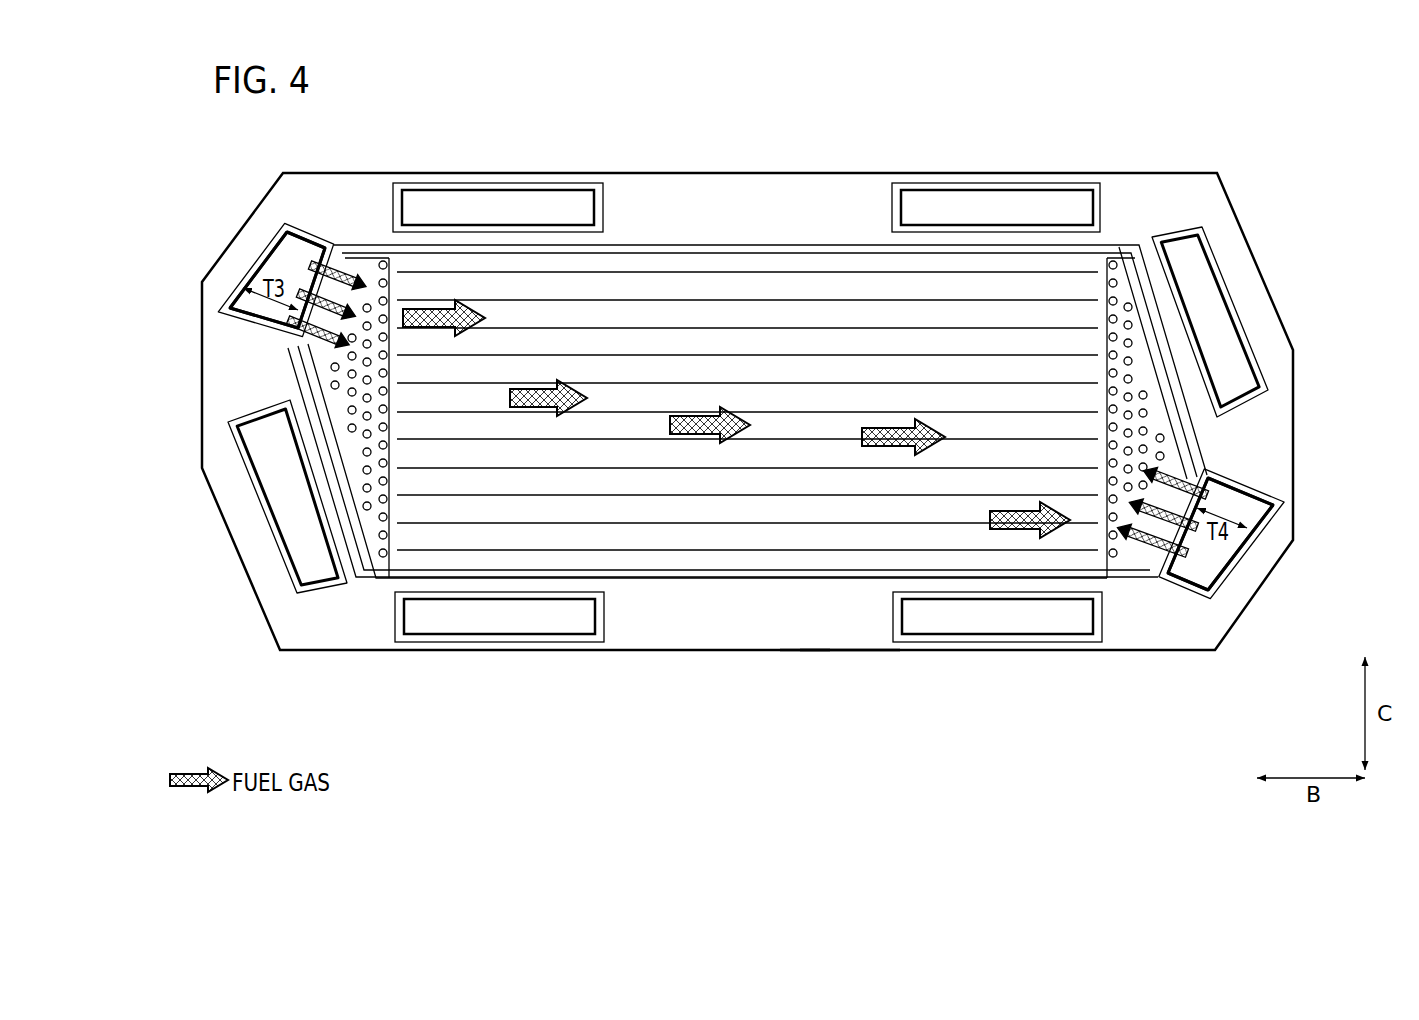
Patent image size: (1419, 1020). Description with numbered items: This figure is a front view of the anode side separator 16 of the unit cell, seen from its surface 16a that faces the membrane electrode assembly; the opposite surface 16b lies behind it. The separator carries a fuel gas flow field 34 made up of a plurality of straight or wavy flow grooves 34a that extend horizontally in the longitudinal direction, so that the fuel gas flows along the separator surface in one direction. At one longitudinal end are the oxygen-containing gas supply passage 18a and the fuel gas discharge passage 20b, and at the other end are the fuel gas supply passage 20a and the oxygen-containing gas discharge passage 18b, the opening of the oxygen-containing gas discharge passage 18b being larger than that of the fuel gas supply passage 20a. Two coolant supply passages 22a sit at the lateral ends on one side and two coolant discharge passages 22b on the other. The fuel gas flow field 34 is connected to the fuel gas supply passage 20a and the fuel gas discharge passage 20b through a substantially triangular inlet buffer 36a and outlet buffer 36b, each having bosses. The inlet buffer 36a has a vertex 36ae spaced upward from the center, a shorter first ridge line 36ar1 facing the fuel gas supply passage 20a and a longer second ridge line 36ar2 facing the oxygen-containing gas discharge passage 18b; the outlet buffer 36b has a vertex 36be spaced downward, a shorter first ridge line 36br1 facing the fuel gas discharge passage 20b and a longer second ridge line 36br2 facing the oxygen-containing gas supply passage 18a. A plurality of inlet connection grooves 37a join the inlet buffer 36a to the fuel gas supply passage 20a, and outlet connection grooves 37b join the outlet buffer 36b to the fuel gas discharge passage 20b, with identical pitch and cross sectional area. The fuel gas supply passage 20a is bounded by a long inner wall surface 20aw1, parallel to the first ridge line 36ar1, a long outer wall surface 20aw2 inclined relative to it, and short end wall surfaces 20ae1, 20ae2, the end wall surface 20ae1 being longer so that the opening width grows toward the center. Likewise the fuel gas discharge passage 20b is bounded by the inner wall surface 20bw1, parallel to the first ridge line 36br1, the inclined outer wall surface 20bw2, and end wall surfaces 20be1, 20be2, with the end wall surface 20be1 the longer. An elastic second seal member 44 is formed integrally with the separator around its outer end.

The anode side separator 16 is at (420, 108).
The surface 16a is at (863, 620).
The surface 16b is at (822, 628).
The oxygen-containing gas supply passage 18a is at (1205, 287).
The oxygen-containing gas discharge passage 18b is at (297, 528).
The fuel gas supply passage 20a is at (242, 302).
The end wall surface 20ae1 is at (258, 312).
The end wall surface 20ae2 is at (272, 237).
The inner wall surface 20aw1 is at (303, 258).
The outer wall surface 20aw2 is at (258, 275).
The fuel gas discharge passage 20b is at (1270, 533).
The end wall surface 20be1 is at (1245, 505).
The end wall surface 20be2 is at (1222, 578).
The inner wall surface 20bw1 is at (1195, 585).
The outer wall surface 20bw2 is at (1243, 560).
The coolant supply passage 22a is at (985, 200).
The coolant discharge passage 22b is at (443, 203).
The fuel gas flow field 34 is at (675, 508).
The flow grooves 34a is at (762, 507).
The inlet buffer 36a is at (350, 442).
The vertex 36ae is at (362, 432).
The first ridge line 36ar1 is at (317, 338).
The second ridge line 36ar2 is at (357, 492).
The outlet buffer 36b is at (1135, 378).
The vertex 36be is at (1193, 453).
The first ridge line 36br1 is at (1187, 470).
The second ridge line 36br2 is at (1157, 320).
The inlet connection grooves 37a is at (338, 287).
The outlet connection grooves 37b is at (1158, 562).
The second seal member 44 is at (735, 247).